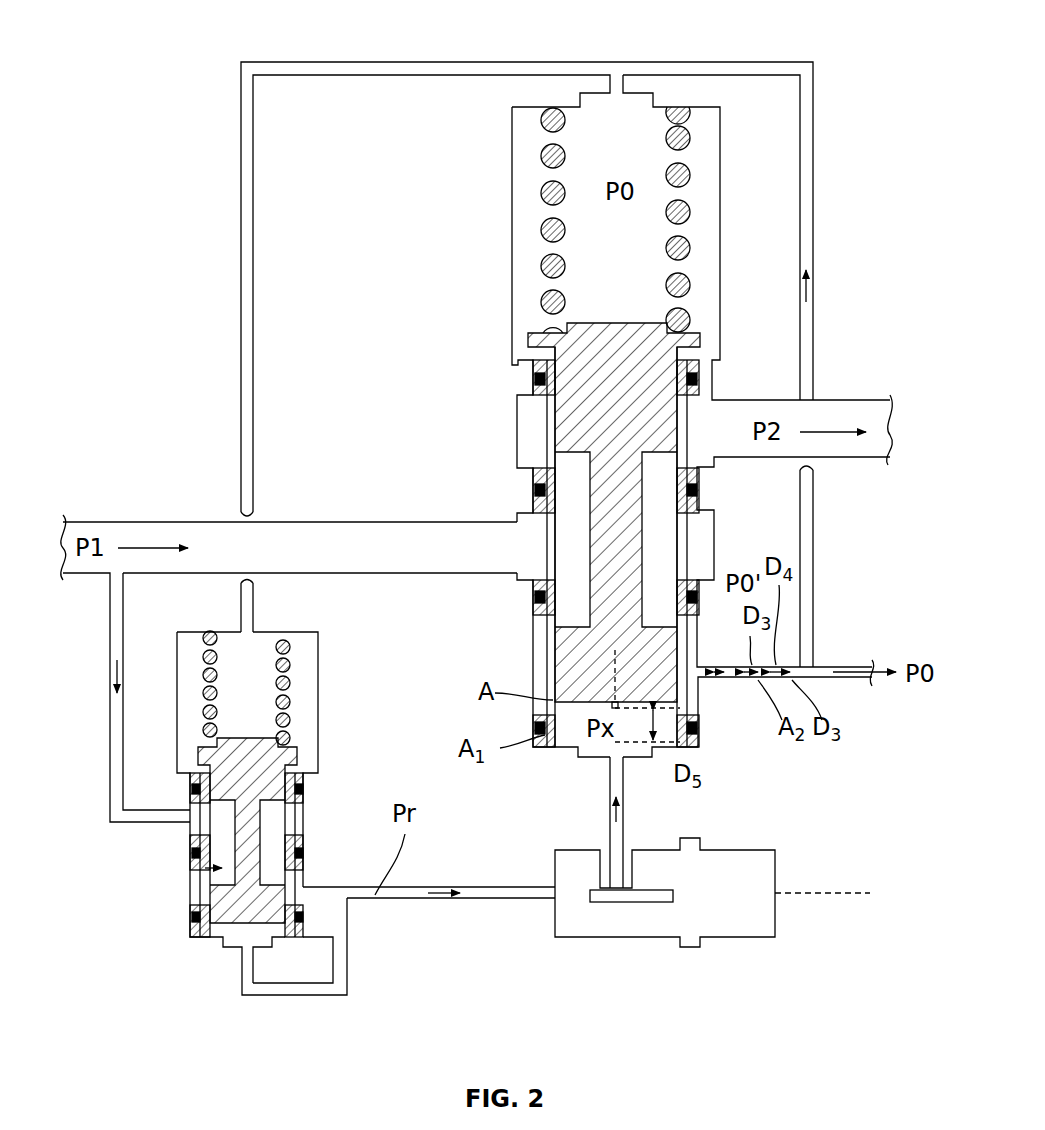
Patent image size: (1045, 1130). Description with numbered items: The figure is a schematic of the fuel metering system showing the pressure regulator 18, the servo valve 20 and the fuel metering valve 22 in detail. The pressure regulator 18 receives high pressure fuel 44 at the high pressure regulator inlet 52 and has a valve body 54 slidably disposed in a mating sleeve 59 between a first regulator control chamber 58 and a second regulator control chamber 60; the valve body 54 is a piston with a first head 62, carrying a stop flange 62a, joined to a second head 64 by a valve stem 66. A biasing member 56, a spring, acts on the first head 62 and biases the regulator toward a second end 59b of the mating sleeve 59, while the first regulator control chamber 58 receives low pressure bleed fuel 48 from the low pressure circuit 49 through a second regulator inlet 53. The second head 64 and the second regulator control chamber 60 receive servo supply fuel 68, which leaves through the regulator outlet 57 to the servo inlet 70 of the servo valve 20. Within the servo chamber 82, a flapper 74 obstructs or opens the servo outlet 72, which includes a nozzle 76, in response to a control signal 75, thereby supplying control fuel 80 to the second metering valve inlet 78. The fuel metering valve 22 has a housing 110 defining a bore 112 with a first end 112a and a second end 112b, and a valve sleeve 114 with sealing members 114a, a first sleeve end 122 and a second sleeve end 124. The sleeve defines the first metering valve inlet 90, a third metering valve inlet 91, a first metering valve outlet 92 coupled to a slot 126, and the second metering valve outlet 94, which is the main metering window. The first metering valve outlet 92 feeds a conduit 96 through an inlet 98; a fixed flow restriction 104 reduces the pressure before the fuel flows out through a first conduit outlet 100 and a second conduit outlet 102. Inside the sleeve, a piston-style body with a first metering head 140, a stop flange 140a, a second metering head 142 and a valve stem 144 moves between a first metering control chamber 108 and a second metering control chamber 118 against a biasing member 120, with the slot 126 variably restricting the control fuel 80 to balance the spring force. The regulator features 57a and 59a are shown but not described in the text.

The pressure regulator 18 is at (222, 826).
The servo valve 20 is at (623, 1008).
The fuel metering valve 22 is at (701, 416).
The high pressure fuel 44 is at (148, 548).
The low pressure bleed fuel 48 is at (809, 290).
The low pressure circuit 49 is at (824, 186).
The high pressure regulator inlet 52 is at (200, 812).
The second regulator inlet 53 is at (254, 632).
The valve body 54 is at (298, 745).
The biasing member 56 is at (288, 682).
The regulator outlet 57 is at (301, 888).
The housing portion 57a is at (203, 940).
The first regulator control chamber 58 is at (318, 690).
The mating sleeve 59 is at (310, 800).
The seal 59a is at (200, 765).
The second end 59b is at (196, 940).
The second regulator control chamber 60 is at (300, 940).
The first head 62 is at (302, 754).
The stop flange 62a is at (200, 752).
The second head 64 is at (262, 925).
The valve stem 66 is at (258, 830).
The servo supply fuel 68 is at (440, 887).
The servo inlet 70 is at (553, 905).
The servo outlet 72 is at (683, 902).
The flapper 74 is at (633, 896).
The control signal 75 is at (815, 890).
The nozzle 76 is at (604, 880).
The second metering valve inlet 78 is at (603, 760).
The control fuel 80 is at (626, 812).
The servo chamber 82 is at (598, 928).
The first metering valve inlet 90 is at (535, 545).
The third metering valve inlet 91 is at (624, 93).
The first metering valve outlet 92 is at (705, 667).
The second metering valve outlet 94 is at (815, 383).
The conduit 96 is at (868, 592).
The inlet 98 is at (715, 722).
The first conduit outlet 100 is at (814, 525).
The second conduit outlet 102 is at (853, 667).
The fixed flow restriction 104 is at (748, 688).
The first metering control chamber 108 is at (536, 190).
The housing 110 is at (735, 272).
The bore 112 is at (708, 394).
The first end 112a is at (518, 112).
The second end 112b is at (550, 814).
The valve sleeve 114 is at (538, 708).
The sealing members 114a is at (538, 380).
The second metering control chamber 118 is at (540, 752).
The biasing member 120 is at (688, 138).
The first sleeve end 122 is at (700, 357).
The second sleeve end 124 is at (712, 760).
The slot 126 is at (616, 708).
The first metering head 140 is at (580, 420).
The stop flange 140a is at (700, 334).
The second metering head 142 is at (592, 648).
The valve stem 144 is at (598, 618).